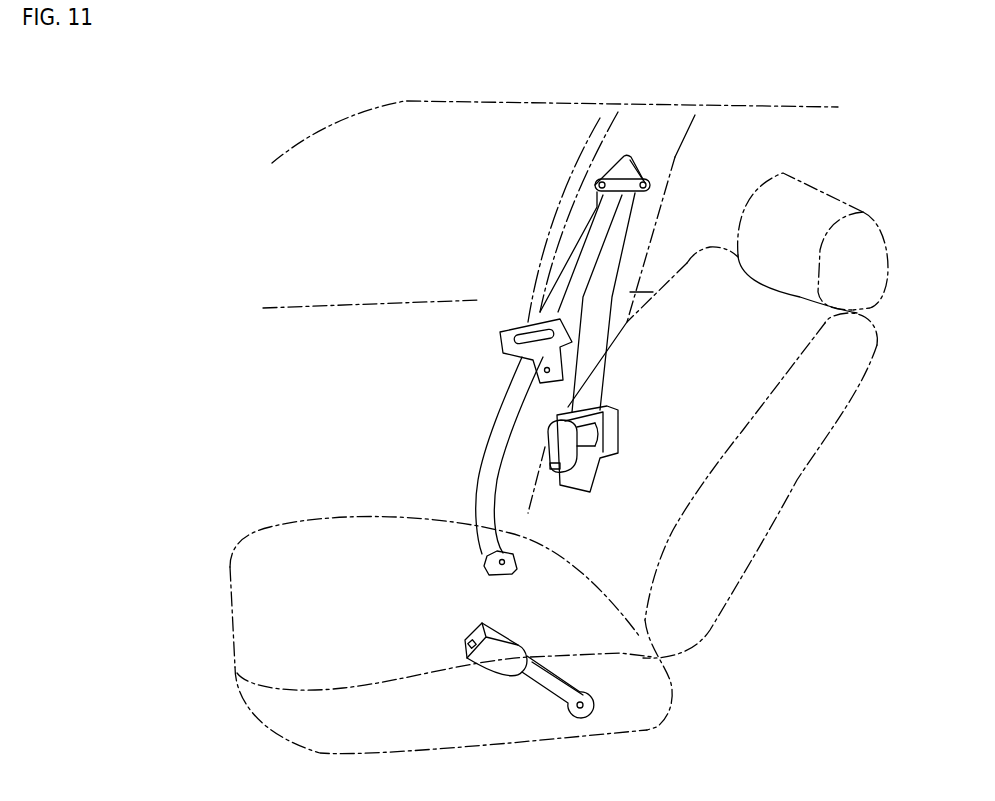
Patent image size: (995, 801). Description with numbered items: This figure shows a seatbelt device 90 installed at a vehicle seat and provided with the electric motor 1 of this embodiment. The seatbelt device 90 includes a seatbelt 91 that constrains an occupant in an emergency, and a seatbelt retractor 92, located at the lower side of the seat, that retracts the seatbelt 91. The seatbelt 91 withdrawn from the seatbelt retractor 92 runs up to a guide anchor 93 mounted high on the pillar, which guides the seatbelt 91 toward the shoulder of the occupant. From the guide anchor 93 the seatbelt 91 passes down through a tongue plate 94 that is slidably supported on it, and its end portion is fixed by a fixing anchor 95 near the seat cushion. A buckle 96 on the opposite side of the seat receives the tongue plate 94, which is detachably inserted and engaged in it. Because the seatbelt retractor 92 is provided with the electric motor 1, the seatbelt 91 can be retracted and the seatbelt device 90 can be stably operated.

The electric motor 1 is at (550, 466).
The seatbelt device 90 is at (652, 514).
The seatbelt 91 is at (577, 268).
The seatbelt retractor 92 is at (618, 438).
The guide anchor 93 is at (633, 163).
The tongue plate 94 is at (507, 332).
The fixing anchor 95 is at (507, 574).
The buckle 96 is at (475, 660).